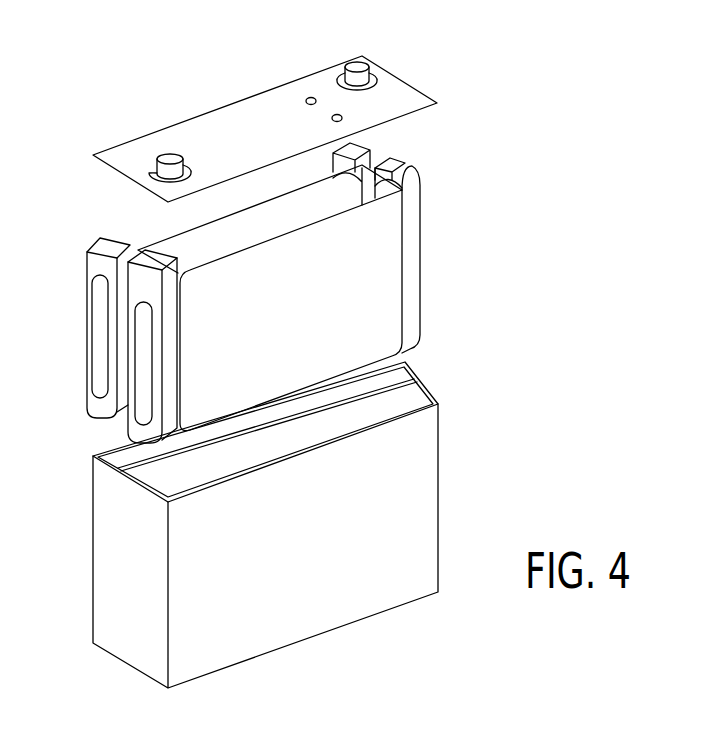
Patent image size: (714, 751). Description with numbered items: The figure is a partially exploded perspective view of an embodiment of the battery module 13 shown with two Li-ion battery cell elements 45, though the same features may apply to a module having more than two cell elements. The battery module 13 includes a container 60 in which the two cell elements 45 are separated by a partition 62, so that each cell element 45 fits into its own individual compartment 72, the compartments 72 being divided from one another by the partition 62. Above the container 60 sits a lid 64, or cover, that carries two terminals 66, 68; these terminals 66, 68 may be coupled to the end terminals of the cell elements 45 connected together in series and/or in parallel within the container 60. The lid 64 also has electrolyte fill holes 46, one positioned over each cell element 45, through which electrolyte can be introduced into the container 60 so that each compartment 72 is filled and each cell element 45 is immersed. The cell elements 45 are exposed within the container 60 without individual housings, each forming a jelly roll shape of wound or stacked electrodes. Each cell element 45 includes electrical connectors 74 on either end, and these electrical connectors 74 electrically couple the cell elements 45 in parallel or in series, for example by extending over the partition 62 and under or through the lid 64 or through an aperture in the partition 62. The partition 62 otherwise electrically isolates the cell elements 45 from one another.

The battery module 13 is at (486, 68).
The Li-ion battery cell element 45 is at (320, 192).
The electrolyte fill hole 46 is at (331, 118).
The container 60 is at (440, 497).
The partition 62 is at (405, 380).
The lid 64 is at (118, 153).
The terminal 66 is at (172, 158).
The terminal 68 is at (355, 70).
The compartment 72 is at (168, 483).
The electrical connector 74 is at (370, 152).